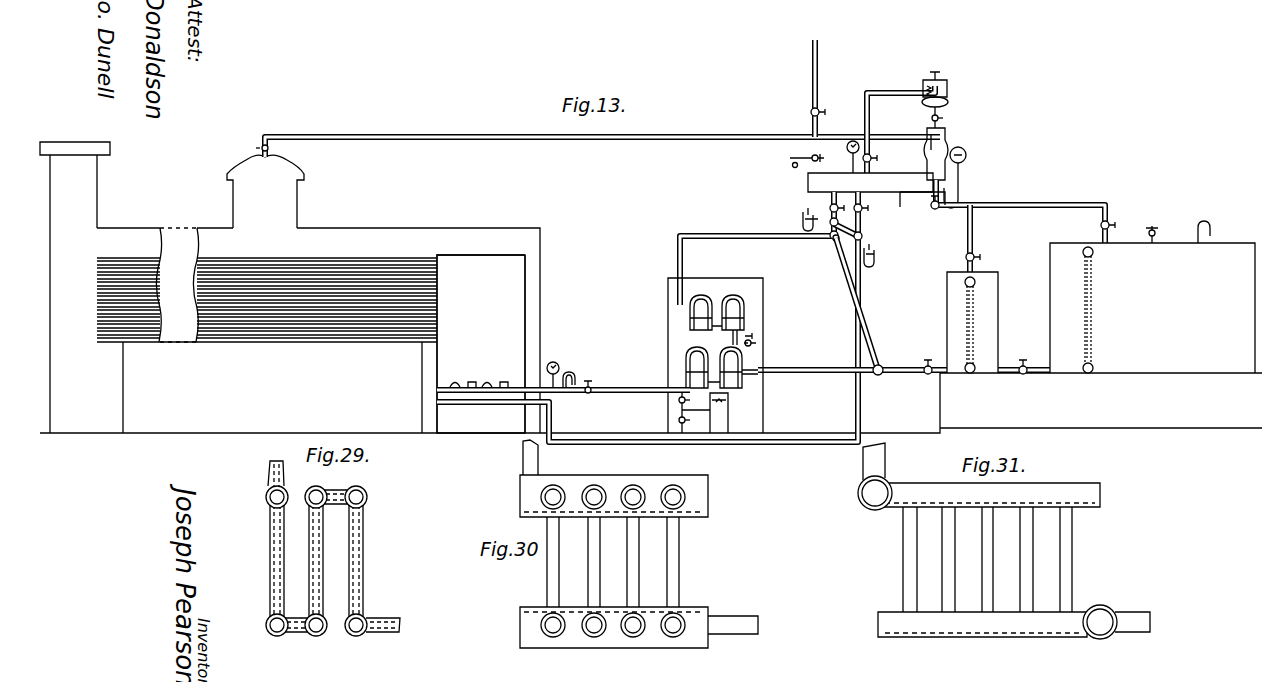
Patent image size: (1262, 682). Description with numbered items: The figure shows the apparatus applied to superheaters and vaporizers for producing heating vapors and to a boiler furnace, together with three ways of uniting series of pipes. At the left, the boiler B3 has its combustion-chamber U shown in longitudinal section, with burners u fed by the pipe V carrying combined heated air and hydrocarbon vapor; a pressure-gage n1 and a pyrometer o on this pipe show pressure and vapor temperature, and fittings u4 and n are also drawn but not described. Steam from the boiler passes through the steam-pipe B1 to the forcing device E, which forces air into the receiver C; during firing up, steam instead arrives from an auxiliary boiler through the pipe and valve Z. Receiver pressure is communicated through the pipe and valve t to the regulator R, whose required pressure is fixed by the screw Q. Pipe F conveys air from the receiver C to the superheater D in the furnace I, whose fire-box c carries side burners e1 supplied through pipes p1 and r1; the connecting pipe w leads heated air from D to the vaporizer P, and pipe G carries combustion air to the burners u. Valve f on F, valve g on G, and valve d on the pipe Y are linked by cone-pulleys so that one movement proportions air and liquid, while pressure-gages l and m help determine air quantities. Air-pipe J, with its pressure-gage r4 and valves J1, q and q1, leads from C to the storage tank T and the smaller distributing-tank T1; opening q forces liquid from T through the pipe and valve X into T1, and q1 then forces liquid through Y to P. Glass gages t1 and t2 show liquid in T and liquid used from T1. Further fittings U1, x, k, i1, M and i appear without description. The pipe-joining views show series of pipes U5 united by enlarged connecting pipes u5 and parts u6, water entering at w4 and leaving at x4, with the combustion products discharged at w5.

In FIG. 13, the steam-pipe B1 is at (598, 148).
In FIG. 13, the boiler B3 is at (304, 258).
In FIG. 13, the combustion-chamber U is at (481, 344).
In FIG. 31, the combustion-chamber U is at (987, 559).
In FIG. 13, the pipe and valve Z is at (810, 88).
In FIG. 13, the pipe to regulator U1 is at (901, 126).
In FIG. 13, the pipe and valve t is at (874, 155).
In FIG. 13, the screw Q is at (942, 79).
In FIG. 13, the regulator R is at (944, 111).
In FIG. 13, the valve x is at (942, 117).
In FIG. 30, the valve x is at (538, 468).
In FIG. 13, the forcing device E is at (935, 154).
In FIG. 13, the receiver C is at (870, 182).
In FIG. 13, the gauge k is at (847, 154).
In FIG. 13, the cock i1 is at (800, 157).
In FIG. 13, the pressure-gage r4 is at (965, 177).
In FIG. 13, the air-pipe J is at (1020, 211).
In FIG. 13, the connection M is at (922, 197).
In FIG. 13, the valve J1 is at (932, 210).
In FIG. 13, the valve q is at (1113, 225).
In FIG. 13, the valve q1 is at (966, 238).
In FIG. 13, the pipe with valves i is at (652, 317).
In FIG. 13, the pressure-gage l is at (806, 217).
In FIG. 13, the valve g is at (871, 249).
In FIG. 13, the valve f is at (832, 240).
In FIG. 13, the pipe F is at (752, 243).
In FIG. 13, the pressure-gage m is at (856, 304).
In FIG. 13, the pipe G is at (753, 408).
In FIG. 13, the valve d is at (878, 379).
In FIG. 13, the pipe Y is at (914, 364).
In FIG. 13, the pipe and valve X is at (1024, 376).
In FIG. 13, the distributing-tank T1 is at (972, 322).
In FIG. 13, the glass gage t2 is at (963, 325).
In FIG. 13, the tank T is at (1152, 297).
In FIG. 13, the glass gage t1 is at (1096, 310).
In FIG. 13, the furnace I is at (715, 346).
In FIG. 13, the superheater D is at (721, 312).
In FIG. 13, the vaporizer P is at (716, 365).
In FIG. 13, the connecting pipe w is at (728, 341).
In FIG. 13, the fire-box c is at (719, 412).
In FIG. 13, the burners e1 is at (696, 413).
In FIG. 13, the branch pipe p1 is at (676, 401).
In FIG. 13, the pipe r1 is at (677, 419).
In FIG. 13, the pipe V is at (563, 380).
In FIG. 13, the burners u is at (479, 376).
In FIG. 13, the pipe u4 is at (473, 408).
In FIG. 13, the pyrometer o is at (553, 366).
In FIG. 13, the pressure-gage n1 is at (571, 367).
In FIG. 13, the valve n is at (587, 395).
In FIG. 29, the series of pipes U5 is at (316, 561).
In FIG. 30, the series of pipes U5 is at (613, 562).
In FIG. 29, the connecting pipes u5 is at (317, 561).
In FIG. 30, the connecting pipes u5 is at (604, 561).
In FIG. 31, the connecting pipes u5 is at (988, 560).
In FIG. 30, the header u6 is at (615, 561).
In FIG. 31, the header u6 is at (987, 557).
In FIG. 30, the discharge w5 is at (598, 636).
In FIG. 29, the water outlet x4 is at (282, 462).
In FIG. 31, the water outlet x4 is at (884, 470).
In FIG. 29, the water inlet w4 is at (395, 623).
In FIG. 30, the water inlet w4 is at (733, 625).
In FIG. 31, the water inlet w4 is at (1132, 622).